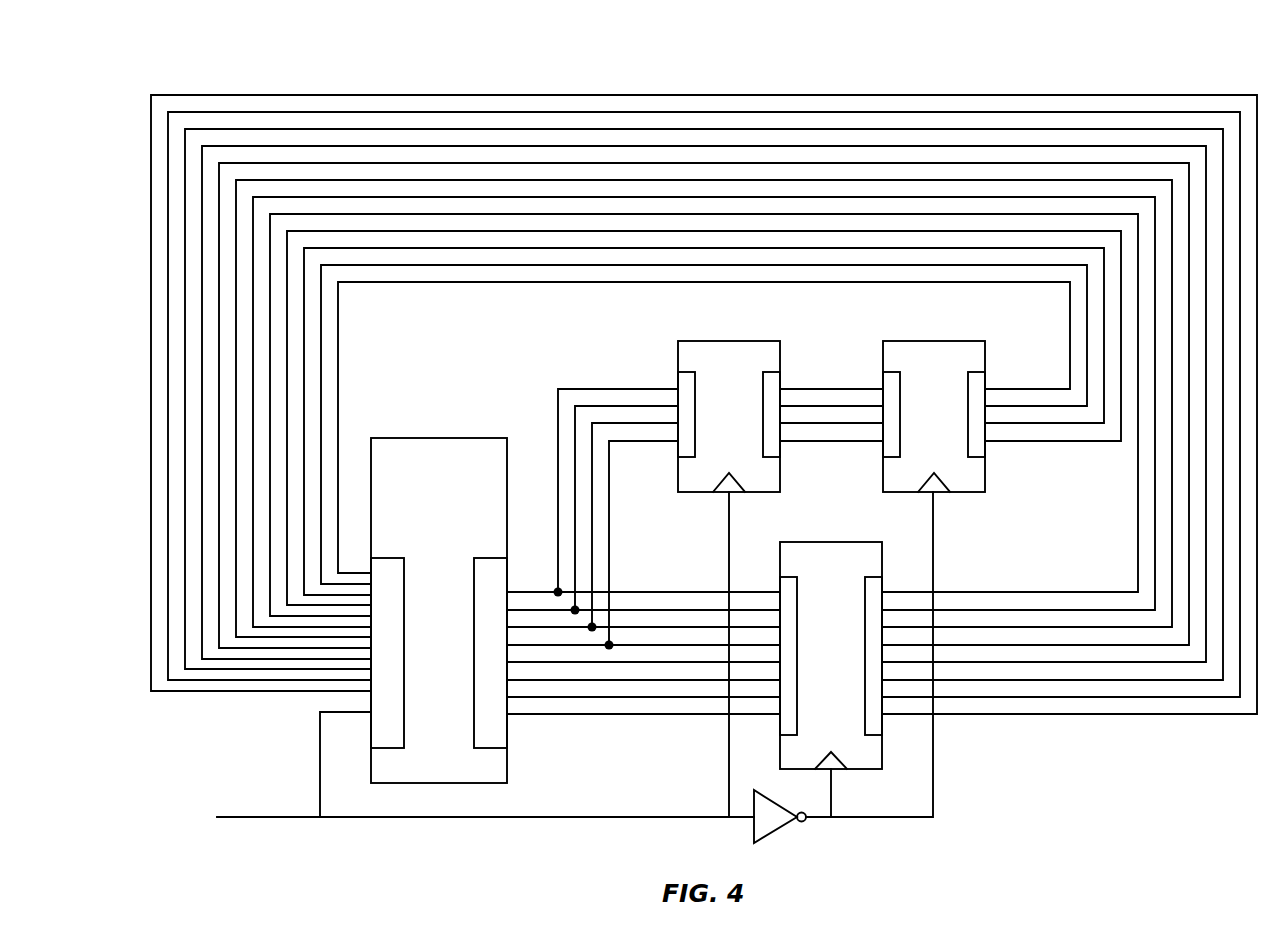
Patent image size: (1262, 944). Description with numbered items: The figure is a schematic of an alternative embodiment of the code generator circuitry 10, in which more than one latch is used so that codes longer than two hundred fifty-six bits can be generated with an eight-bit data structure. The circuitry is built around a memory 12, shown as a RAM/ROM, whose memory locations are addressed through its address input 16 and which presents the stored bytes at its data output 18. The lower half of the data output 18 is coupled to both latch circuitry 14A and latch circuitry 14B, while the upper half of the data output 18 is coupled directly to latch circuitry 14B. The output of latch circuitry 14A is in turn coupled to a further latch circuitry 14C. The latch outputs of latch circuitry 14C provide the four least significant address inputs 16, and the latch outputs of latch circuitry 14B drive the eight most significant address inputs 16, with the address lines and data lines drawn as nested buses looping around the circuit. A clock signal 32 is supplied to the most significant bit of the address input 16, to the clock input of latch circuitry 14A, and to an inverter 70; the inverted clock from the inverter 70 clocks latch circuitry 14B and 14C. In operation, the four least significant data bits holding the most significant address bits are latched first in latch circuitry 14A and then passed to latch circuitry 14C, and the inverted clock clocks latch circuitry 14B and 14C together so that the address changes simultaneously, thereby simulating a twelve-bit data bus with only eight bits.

The code generator circuitry 10 is at (762, 76).
The memory 12 is at (439, 591).
The latch circuitry 14A is at (781, 346).
The latch circuitry 14B is at (860, 772).
The latch circuitry 14C is at (986, 346).
The address input 16 is at (404, 566).
The data output 18 is at (473, 625).
The clock signal 32 is at (490, 818).
The inverter 70 is at (785, 840).